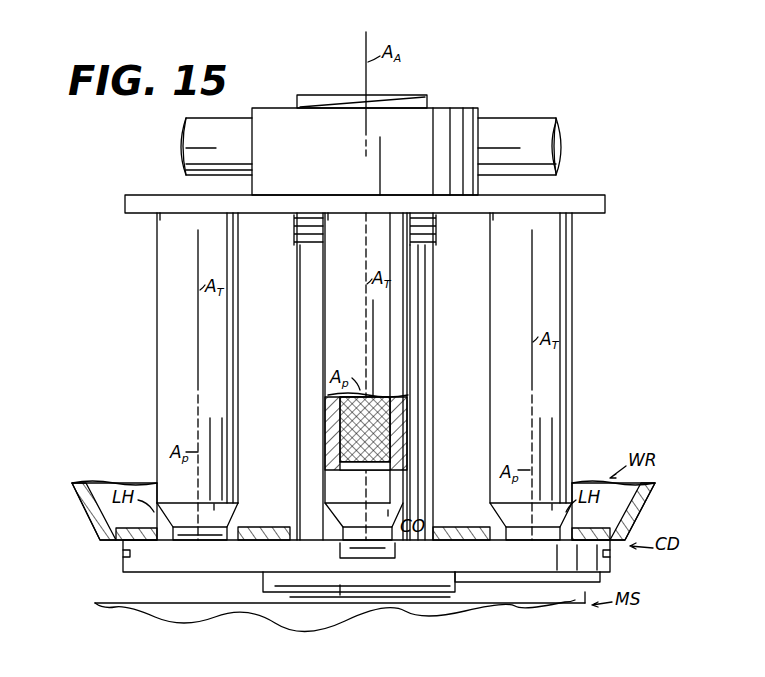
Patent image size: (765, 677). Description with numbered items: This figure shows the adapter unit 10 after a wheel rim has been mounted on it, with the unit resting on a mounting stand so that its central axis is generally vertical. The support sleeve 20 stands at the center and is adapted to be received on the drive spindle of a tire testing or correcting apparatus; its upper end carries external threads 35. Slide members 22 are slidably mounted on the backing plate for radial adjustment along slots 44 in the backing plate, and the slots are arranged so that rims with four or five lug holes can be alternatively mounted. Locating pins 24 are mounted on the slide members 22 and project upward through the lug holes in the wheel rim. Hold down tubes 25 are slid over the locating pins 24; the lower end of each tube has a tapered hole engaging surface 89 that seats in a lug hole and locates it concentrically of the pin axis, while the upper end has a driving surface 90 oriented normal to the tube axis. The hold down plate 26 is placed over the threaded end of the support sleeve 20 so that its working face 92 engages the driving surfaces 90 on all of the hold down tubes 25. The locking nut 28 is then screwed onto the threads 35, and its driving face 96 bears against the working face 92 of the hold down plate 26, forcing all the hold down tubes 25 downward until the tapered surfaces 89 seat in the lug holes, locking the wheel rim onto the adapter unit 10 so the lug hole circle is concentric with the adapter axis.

The adapter unit 10 is at (572, 96).
The locking nut 28 is at (481, 101).
The driving face 96 is at (384, 198).
The working face 92 is at (572, 195).
The hold down plate 26 is at (614, 206).
The driving surface 90 is at (196, 214).
The threads 35 is at (288, 239).
The hold down tubes 25 is at (150, 299).
The support sleeve 20 is at (294, 315).
The locating pins 24 is at (405, 419).
The tapered hole engaging surface 89 is at (222, 492).
The slots 44 is at (329, 559).
The slide members 22 is at (390, 552).